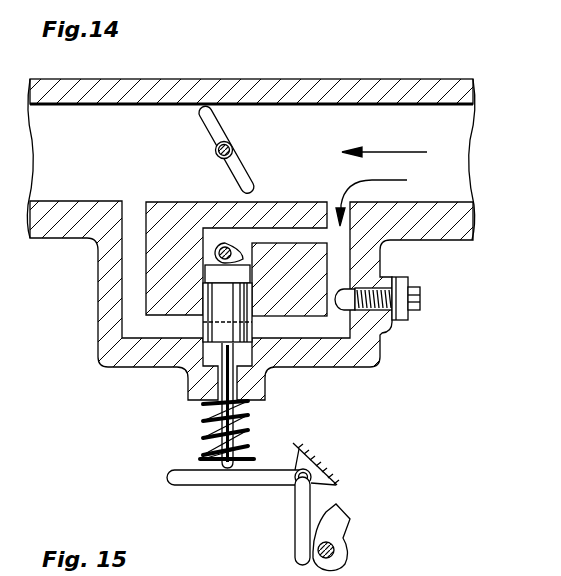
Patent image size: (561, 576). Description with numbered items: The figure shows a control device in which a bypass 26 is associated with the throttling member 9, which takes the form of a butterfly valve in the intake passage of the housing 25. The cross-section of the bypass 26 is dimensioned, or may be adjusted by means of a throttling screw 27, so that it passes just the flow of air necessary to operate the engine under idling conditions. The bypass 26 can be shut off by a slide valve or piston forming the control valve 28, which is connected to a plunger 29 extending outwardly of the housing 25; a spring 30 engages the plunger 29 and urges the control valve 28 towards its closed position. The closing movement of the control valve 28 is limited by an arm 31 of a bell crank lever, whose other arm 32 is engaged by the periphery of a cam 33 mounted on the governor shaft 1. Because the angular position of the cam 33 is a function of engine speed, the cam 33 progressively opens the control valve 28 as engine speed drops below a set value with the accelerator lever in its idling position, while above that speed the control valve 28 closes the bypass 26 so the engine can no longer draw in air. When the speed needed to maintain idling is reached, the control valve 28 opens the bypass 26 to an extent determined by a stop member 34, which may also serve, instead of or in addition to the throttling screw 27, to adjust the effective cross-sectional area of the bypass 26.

The housing 25 is at (357, 93).
The throttling member 9 is at (207, 123).
The stop member 34 is at (243, 258).
The control valve 28 is at (237, 301).
The throttling screw 27 is at (418, 312).
The bypass 26 is at (154, 338).
The plunger 29 is at (226, 428).
The spring 30 is at (248, 428).
The arm of bell crank lever 31 is at (202, 478).
The other arm of bell crank lever 32 is at (296, 535).
The cam 33 is at (336, 520).
The governor shaft 1 is at (334, 554).